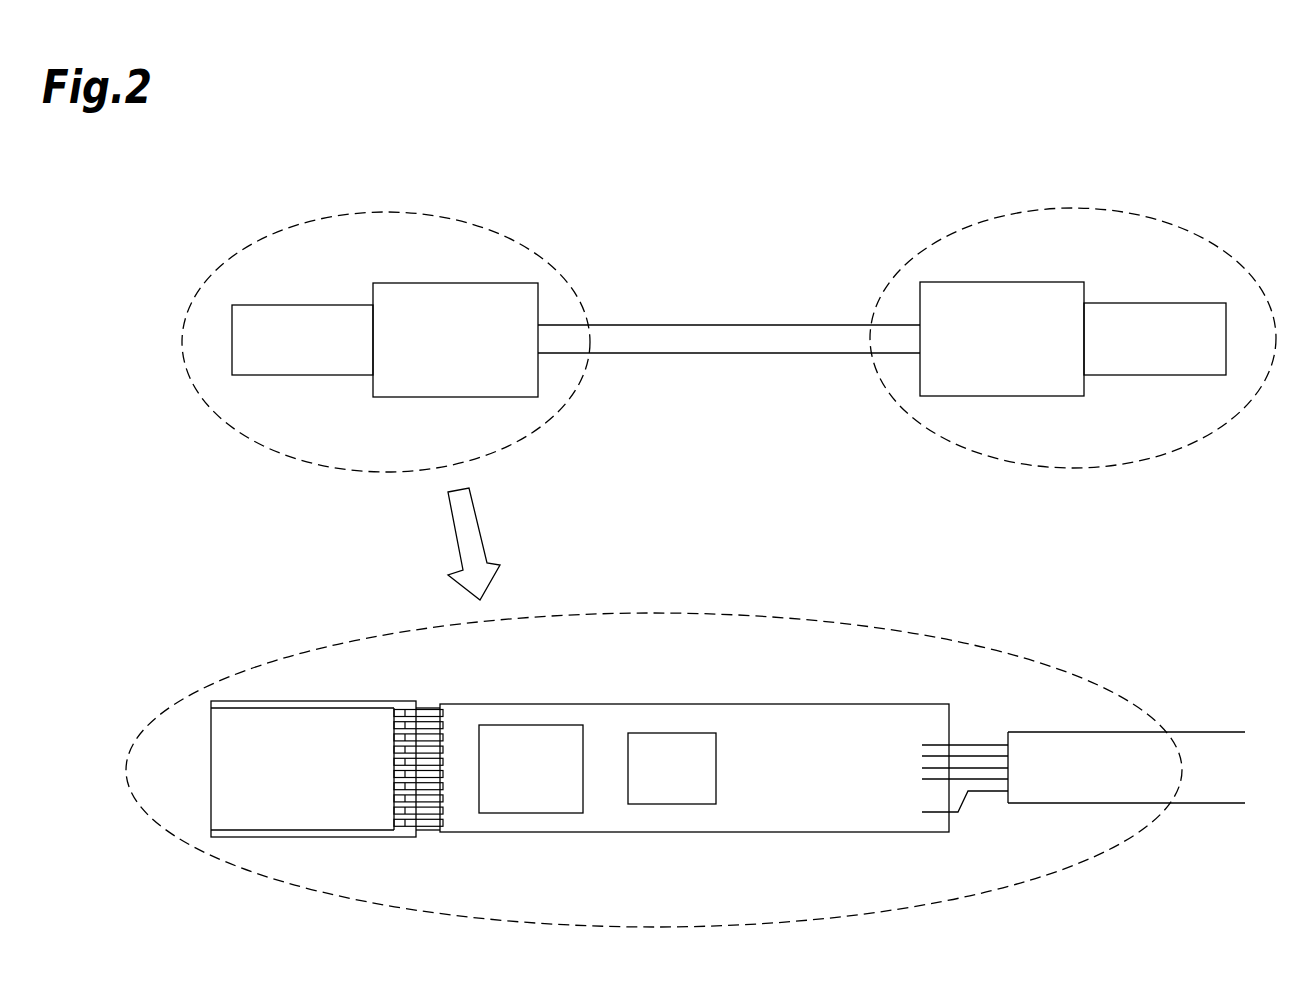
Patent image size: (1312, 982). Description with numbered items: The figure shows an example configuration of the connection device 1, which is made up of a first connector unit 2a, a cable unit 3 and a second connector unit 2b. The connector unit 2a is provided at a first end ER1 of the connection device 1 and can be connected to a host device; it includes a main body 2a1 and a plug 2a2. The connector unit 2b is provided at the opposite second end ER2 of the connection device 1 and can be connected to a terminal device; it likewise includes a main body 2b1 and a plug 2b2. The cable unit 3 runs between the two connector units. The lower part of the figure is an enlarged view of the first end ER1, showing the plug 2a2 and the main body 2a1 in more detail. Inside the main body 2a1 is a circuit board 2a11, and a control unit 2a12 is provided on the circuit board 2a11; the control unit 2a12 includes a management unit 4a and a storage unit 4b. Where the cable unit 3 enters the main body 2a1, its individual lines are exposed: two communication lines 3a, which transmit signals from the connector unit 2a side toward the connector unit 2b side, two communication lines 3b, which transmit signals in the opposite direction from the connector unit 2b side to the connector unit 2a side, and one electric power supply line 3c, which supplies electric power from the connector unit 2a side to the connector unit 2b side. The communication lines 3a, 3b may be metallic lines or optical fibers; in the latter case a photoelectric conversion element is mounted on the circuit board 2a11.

The connection device 1 is at (748, 170).
The connector unit 2a is at (480, 147).
The main body 2a1 is at (661, 491).
The plug 2a2 is at (313, 303).
The circuit board 2a11 is at (767, 733).
The control unit 2a12 is at (597, 664).
The connector unit 2b is at (1175, 147).
The main body 2b1 is at (1005, 282).
The plug 2b2 is at (1148, 303).
The cable unit 3 is at (891, 575).
The communication line 3a is at (968, 745).
The communication line 3b is at (988, 782).
The electric power supply line 3c is at (972, 813).
The management unit 4a is at (532, 725).
The storage unit 4b is at (672, 733).
The end ER1 is at (240, 246).
The end ER2 is at (1219, 246).